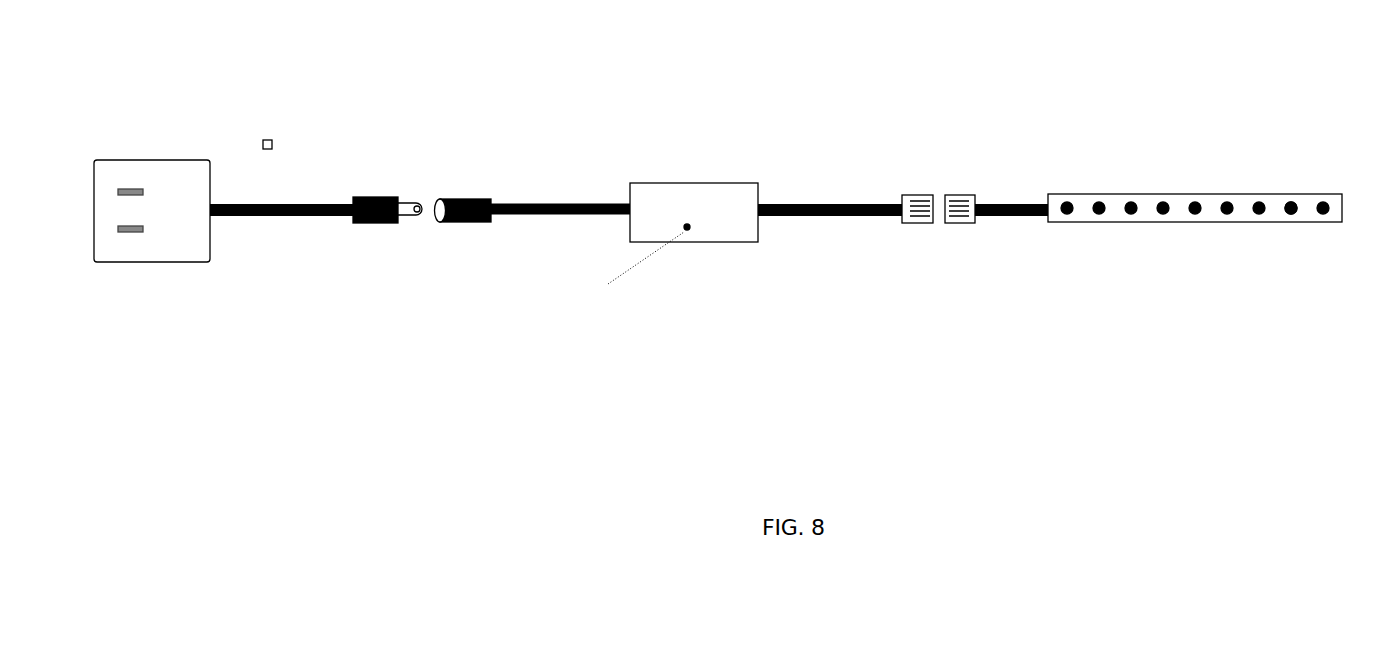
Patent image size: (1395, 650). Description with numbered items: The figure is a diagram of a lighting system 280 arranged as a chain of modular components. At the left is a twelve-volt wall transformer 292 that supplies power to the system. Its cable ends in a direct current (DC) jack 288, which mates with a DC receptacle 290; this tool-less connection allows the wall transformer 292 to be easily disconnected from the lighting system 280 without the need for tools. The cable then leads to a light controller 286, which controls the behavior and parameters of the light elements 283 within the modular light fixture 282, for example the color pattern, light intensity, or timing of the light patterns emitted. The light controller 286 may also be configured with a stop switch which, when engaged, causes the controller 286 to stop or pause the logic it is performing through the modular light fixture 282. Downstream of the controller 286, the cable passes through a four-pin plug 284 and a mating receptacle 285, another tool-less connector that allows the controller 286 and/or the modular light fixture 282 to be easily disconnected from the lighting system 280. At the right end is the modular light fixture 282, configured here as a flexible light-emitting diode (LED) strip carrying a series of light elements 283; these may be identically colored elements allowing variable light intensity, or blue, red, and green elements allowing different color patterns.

The lighting system 280 is at (813, 68).
The modular light fixture 282 is at (1196, 194).
The light elements 283 is at (1290, 194).
The 4-pin plug 284 is at (920, 224).
The receptacle 285 is at (952, 224).
The light controller 286 is at (713, 243).
The DC jack 288 is at (380, 224).
The DC receptacle 290 is at (460, 224).
The 12-volt wall transformer 292 is at (165, 262).